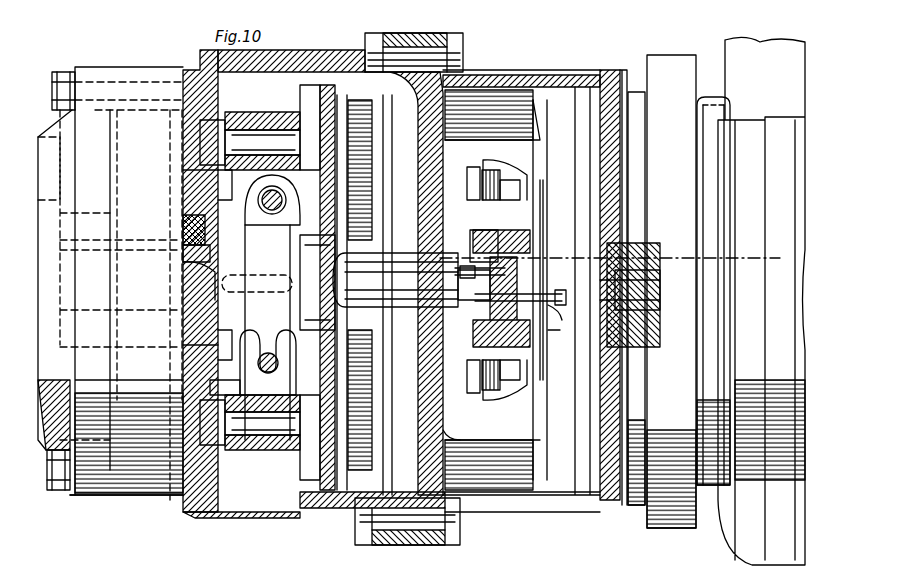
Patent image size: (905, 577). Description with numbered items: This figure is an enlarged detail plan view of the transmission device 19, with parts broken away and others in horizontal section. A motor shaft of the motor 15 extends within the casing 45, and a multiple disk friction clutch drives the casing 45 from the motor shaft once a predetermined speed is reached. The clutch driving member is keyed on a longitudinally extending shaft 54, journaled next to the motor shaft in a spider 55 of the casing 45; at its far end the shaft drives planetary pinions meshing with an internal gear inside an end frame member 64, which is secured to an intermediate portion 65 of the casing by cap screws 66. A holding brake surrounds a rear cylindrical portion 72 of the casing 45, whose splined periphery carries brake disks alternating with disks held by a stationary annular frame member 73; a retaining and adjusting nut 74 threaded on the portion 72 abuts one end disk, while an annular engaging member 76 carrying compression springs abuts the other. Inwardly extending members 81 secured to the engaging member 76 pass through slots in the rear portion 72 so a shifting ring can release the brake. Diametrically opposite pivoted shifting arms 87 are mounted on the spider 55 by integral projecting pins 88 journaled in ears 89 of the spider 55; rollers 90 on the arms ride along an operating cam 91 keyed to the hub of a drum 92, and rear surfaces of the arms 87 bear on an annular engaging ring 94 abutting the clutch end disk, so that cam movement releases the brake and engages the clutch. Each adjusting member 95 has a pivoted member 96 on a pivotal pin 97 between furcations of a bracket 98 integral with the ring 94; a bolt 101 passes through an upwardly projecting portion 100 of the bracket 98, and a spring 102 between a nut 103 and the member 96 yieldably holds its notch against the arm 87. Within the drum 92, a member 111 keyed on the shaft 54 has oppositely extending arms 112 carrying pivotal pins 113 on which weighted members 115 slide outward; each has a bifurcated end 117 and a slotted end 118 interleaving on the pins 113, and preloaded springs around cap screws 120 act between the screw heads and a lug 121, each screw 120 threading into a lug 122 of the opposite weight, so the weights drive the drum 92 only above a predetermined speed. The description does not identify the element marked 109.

The motor 15 is at (775, 118).
The transmission device 19 is at (137, 497).
The casing 45 is at (525, 46).
The longitudinally extending shaft 54 is at (195, 252).
The spider 55 is at (445, 438).
The end frame member 64 is at (148, 66).
The intermediate portion 65 is at (231, 520).
The cap screws 66 is at (74, 46).
The rear cylindrical portion 72 is at (612, 54).
The stationary annular frame member 73 is at (670, 528).
The retaining and adjusting nut 74 is at (712, 96).
The annular engaging member 76 is at (634, 505).
The inwardly extending members 81 is at (607, 365).
The pivoted shifting arms 87 is at (410, 268).
The projecting pins 88 is at (505, 175).
The ears 89 is at (470, 185).
The rollers 90 is at (355, 258).
The operating cam 91 is at (358, 520).
The drum 92 is at (322, 492).
The annular engaging ring 94 is at (527, 445).
The adjusting members 95 is at (520, 268).
The pivoted member 96 is at (525, 285).
The pivotal pin 97 is at (527, 205).
The bracket 98 is at (522, 232).
The upwardly projecting portion 100 is at (475, 285).
The bolt 101 is at (372, 400).
The spring 102 is at (568, 338).
The nut 103 is at (570, 319).
The block 109 is at (470, 252).
The member 111 is at (212, 265).
The arms 112 is at (232, 172).
The pivotal pins 113 is at (232, 137).
The weighted members 115 is at (272, 118).
The bifurcated end 117 is at (296, 118).
The end 118 is at (262, 200).
The cap screw 120 is at (268, 352).
The lug 121 is at (240, 385).
The lug 122 is at (222, 222).